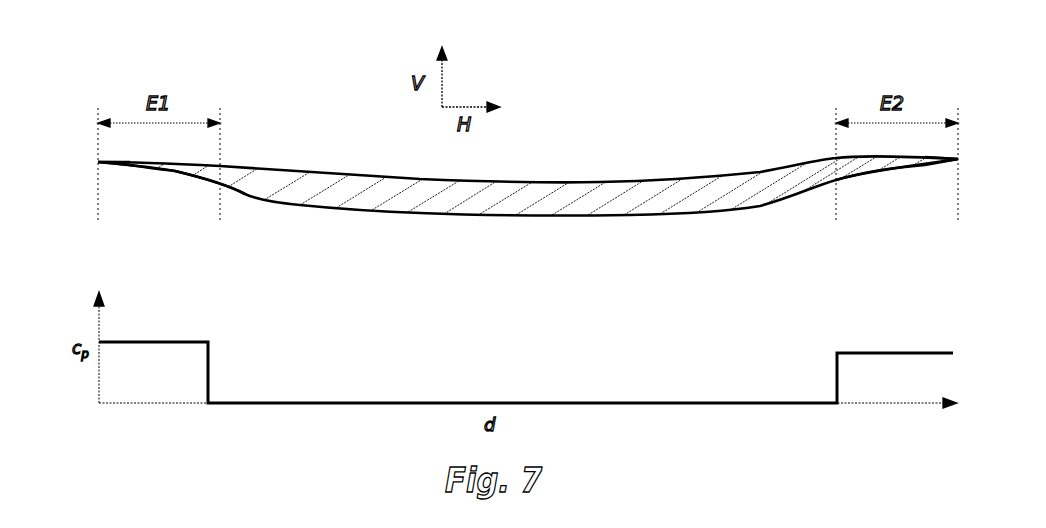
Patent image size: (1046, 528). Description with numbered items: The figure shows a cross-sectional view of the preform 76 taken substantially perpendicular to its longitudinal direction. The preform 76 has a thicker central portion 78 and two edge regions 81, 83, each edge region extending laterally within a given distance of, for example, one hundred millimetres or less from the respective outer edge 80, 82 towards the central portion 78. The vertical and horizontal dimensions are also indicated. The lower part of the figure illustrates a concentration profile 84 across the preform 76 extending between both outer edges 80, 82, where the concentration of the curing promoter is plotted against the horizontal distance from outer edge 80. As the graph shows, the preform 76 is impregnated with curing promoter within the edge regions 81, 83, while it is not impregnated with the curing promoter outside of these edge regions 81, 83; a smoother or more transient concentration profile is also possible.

The preform 76 is at (366, 148).
The central portion 78 is at (512, 196).
The lateral edge 80 is at (98, 163).
The edge region 81 is at (175, 171).
The lateral edge 82 is at (957, 161).
The edge region 83 is at (885, 170).
The concentration profile 84 is at (196, 340).